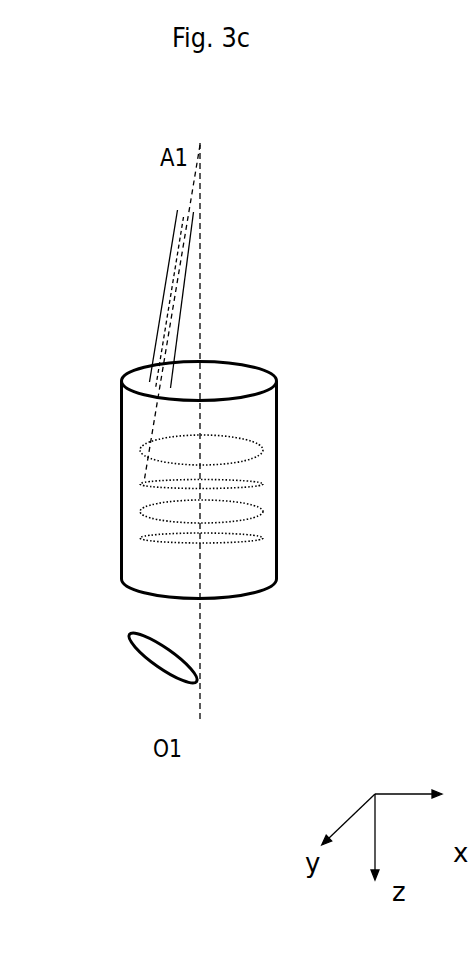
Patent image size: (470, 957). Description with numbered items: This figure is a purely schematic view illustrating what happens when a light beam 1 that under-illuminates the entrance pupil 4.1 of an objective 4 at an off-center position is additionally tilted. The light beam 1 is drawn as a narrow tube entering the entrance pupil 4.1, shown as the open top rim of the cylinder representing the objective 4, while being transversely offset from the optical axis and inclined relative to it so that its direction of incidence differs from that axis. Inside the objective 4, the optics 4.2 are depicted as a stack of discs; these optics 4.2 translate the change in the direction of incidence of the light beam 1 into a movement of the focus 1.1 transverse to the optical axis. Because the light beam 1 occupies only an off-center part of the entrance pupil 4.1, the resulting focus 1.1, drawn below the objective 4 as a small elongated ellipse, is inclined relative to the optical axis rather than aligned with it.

The light beam 1 is at (145, 278).
The focus of the light beam 1.1 is at (187, 668).
The objective 4 is at (178, 470).
The entrance pupil 4.1 is at (257, 380).
The optics 4.2 is at (143, 527).